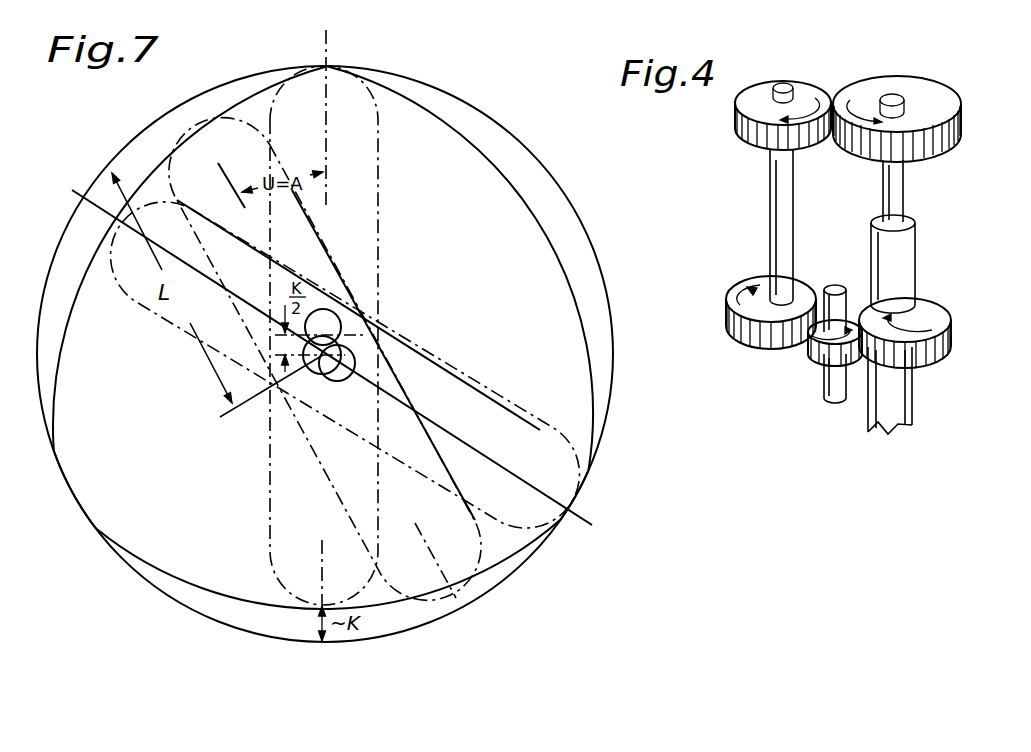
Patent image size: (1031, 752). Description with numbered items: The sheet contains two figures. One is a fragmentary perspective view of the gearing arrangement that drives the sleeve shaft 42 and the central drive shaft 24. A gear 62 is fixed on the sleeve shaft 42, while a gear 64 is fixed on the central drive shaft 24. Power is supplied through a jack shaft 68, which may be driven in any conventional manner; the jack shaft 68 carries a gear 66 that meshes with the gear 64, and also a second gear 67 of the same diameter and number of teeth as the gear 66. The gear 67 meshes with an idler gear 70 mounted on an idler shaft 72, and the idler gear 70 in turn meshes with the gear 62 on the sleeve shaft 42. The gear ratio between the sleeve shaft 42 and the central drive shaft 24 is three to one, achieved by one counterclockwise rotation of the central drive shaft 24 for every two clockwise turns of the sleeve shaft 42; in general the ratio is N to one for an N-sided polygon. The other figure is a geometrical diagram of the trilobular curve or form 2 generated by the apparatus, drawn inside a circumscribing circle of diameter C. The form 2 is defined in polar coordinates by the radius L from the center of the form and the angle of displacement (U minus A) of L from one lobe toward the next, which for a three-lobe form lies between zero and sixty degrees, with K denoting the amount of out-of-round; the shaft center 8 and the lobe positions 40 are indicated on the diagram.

In FIG. 7, the trilobular curve or form 2 is at (542, 240).
In FIG. 7, the shaft 8 is at (330, 378).
In FIG. 7, the rotary piston 40 is at (380, 243).
In FIG. 4, the central drive shaft 24 is at (905, 196).
In FIG. 4, the sleeve shaft 42 is at (912, 400).
In FIG. 4, the gear 62 is at (951, 326).
In FIG. 4, the gear 64 is at (955, 105).
In FIG. 4, the gear 66 is at (742, 138).
In FIG. 4, the second gear 67 is at (736, 328).
In FIG. 4, the jack shaft 68 is at (770, 207).
In FIG. 4, the idler gear 70 is at (815, 350).
In FIG. 4, the idler shaft 72 is at (833, 400).